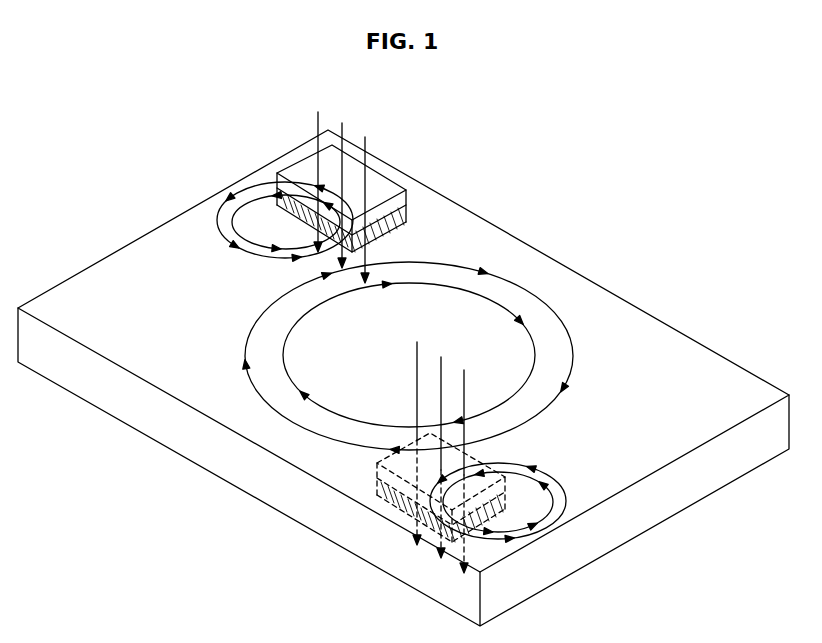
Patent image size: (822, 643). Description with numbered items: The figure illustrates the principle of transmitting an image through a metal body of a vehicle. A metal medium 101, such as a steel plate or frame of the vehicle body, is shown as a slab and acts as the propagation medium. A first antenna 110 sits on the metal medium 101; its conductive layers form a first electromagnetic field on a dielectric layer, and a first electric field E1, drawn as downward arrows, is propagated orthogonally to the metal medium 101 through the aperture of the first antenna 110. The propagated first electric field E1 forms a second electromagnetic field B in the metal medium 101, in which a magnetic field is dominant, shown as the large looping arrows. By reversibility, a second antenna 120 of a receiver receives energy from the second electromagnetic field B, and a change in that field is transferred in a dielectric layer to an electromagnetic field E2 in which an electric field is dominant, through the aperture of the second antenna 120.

The metal medium 101 is at (570, 265).
The first antenna 110 is at (383, 183).
The second antenna 120 is at (393, 505).
The second electromagnetic field B is at (408, 357).
The first electric field E1 is at (341, 186).
The electromagnetic field in which an electric field is dominant E2 is at (440, 468).